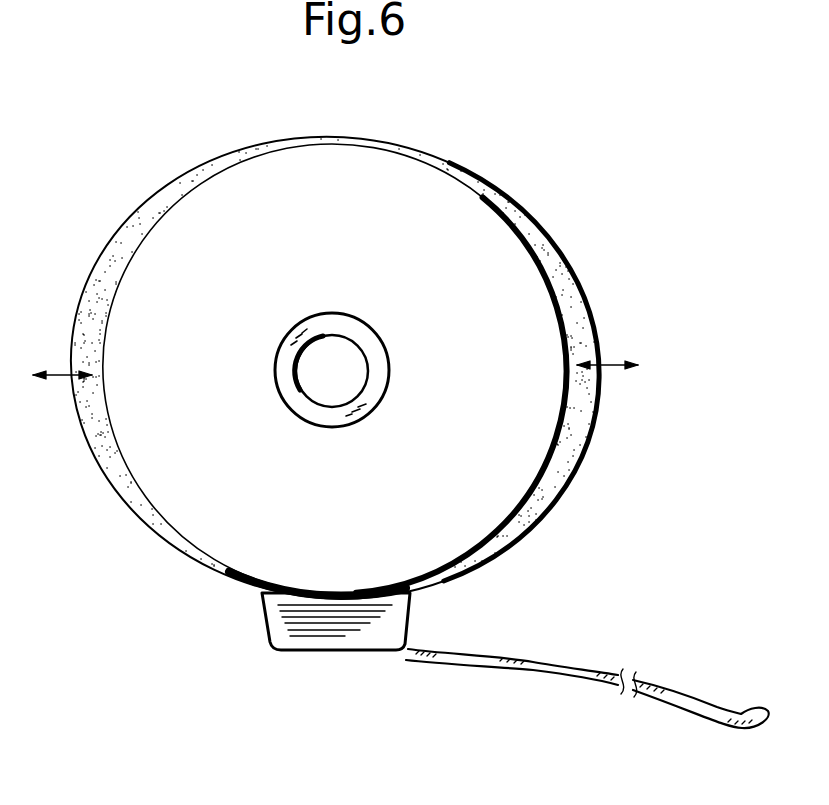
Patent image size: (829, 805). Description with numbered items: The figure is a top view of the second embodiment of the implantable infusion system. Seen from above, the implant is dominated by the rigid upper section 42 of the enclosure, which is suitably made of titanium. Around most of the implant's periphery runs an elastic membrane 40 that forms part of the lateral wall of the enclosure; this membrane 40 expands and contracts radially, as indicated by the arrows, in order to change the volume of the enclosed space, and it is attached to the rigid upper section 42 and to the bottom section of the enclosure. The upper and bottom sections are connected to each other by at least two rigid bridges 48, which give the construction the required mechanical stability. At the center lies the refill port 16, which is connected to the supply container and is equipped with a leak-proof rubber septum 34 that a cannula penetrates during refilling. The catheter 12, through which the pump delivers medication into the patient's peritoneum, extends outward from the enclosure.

The catheter 12 is at (583, 672).
The refill port 16 is at (381, 405).
The septum 34 is at (335, 348).
The elastic membrane 40 is at (86, 436).
The rigid upper section 42 is at (250, 479).
The rigid bridges 48 is at (338, 147).